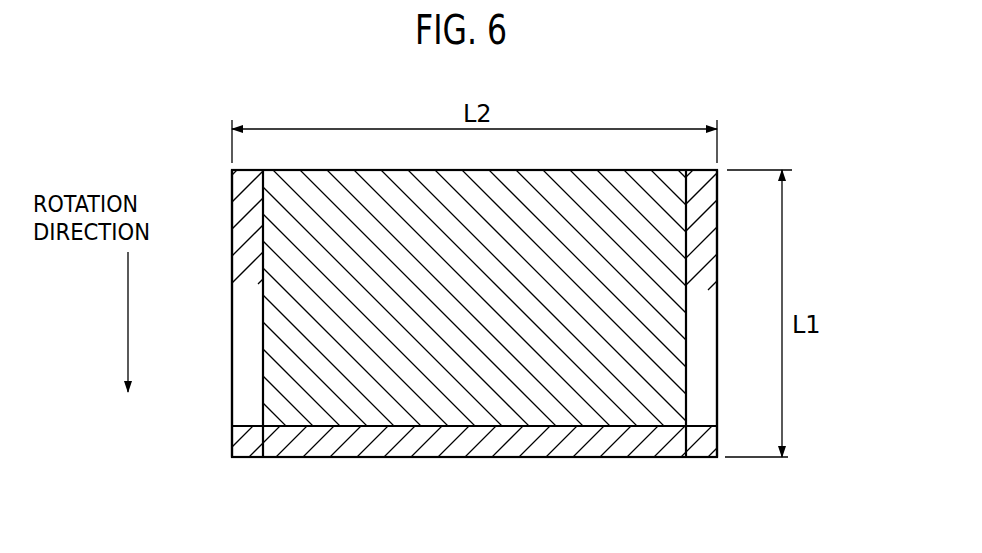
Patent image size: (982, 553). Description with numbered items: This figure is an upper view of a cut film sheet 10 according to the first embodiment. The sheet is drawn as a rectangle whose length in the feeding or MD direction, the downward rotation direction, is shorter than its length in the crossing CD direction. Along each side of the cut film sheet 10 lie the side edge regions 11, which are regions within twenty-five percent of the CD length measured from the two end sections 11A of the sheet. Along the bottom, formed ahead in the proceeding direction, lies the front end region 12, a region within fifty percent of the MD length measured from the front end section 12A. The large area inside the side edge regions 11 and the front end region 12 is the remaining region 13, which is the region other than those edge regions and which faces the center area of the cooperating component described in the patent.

The cut film sheet 10 is at (748, 137).
The side edge regions 11 is at (232, 327).
The end sections 11A is at (232, 380).
The front end region 12 is at (463, 447).
The front end section 12A is at (566, 459).
The remaining region 13 is at (479, 176).